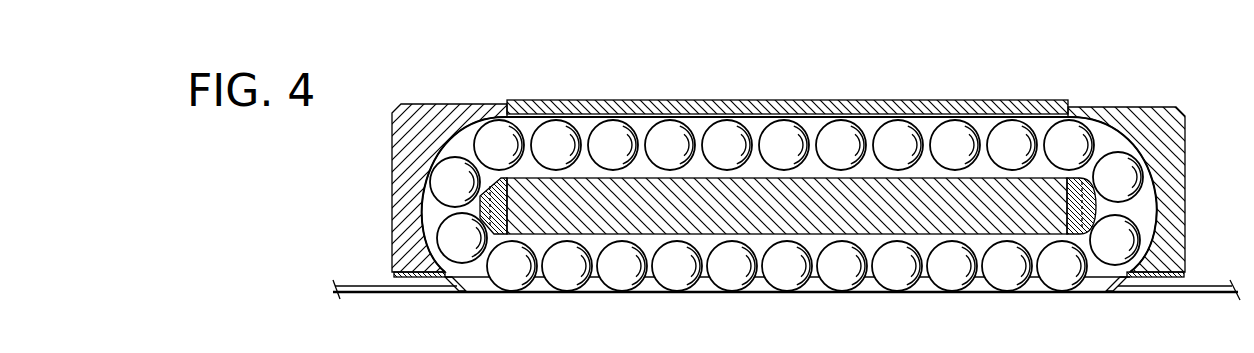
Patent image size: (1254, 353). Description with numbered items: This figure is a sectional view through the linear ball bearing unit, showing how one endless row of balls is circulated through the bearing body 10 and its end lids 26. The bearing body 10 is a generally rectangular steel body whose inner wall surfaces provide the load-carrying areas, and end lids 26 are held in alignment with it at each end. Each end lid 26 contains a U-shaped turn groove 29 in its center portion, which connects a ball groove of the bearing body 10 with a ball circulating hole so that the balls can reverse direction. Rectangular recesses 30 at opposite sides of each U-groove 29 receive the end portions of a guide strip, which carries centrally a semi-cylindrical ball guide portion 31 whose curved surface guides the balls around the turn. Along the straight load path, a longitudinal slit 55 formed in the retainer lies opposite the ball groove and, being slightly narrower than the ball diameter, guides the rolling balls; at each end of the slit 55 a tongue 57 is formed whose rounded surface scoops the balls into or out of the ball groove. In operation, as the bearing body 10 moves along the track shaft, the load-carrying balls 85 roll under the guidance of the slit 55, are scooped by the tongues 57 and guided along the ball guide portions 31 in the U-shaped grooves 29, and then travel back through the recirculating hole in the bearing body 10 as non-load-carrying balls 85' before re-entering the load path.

The bearing body 10 is at (861, 85).
The end lid 26 is at (403, 125).
The U-shaped turn groove 29 is at (424, 203).
The rectangular recess 30 is at (488, 234).
The semi-cylindrical ball guide portion 31 is at (486, 177).
The longitudinal slit 55 is at (538, 279).
The tongue 57 is at (458, 290).
The load-carrying ball 85 is at (801, 291).
The non-load-carrying ball 85' is at (784, 119).